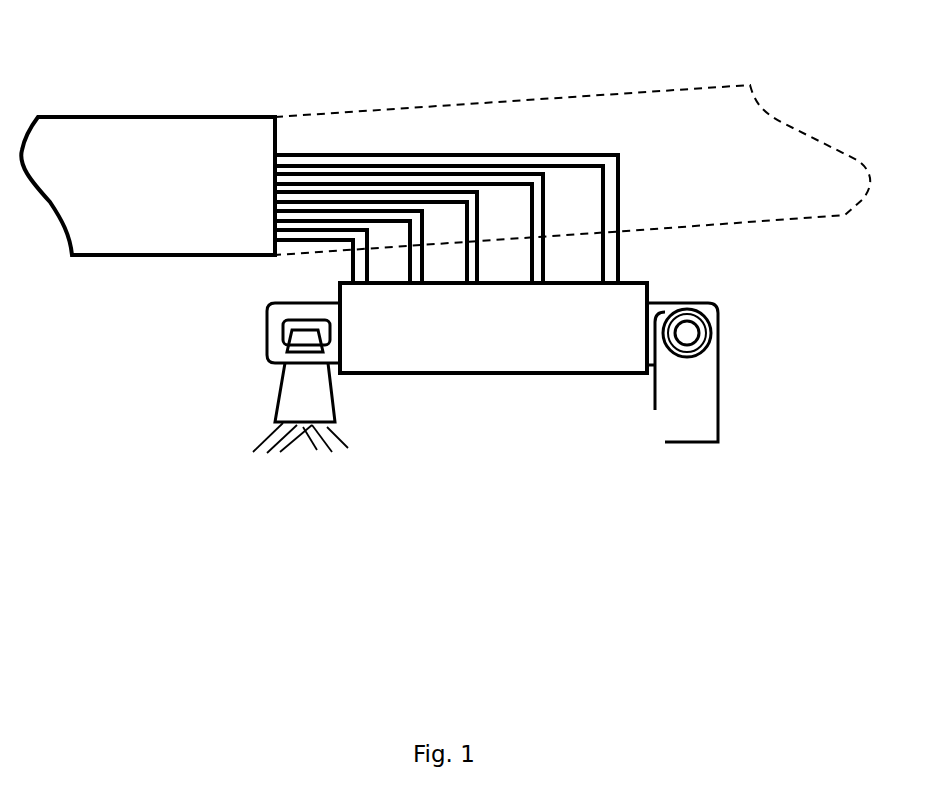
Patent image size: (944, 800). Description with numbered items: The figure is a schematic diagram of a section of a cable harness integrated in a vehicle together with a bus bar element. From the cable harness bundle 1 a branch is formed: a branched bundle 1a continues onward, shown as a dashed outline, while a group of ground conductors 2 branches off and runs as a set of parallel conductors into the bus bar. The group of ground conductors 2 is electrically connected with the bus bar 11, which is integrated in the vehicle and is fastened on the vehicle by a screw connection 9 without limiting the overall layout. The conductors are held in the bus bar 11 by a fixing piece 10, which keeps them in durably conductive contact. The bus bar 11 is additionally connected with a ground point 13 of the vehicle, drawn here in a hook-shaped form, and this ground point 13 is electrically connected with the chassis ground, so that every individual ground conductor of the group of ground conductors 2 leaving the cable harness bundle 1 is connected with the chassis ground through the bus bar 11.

The cable harness bundle 1 is at (60, 116).
The branched bundle 1a is at (358, 111).
The group of ground conductors 2 is at (341, 230).
The screw connection 9 is at (720, 315).
The fixing piece 10 is at (413, 374).
The bus bar 11 is at (252, 331).
The ground point 13 is at (330, 393).